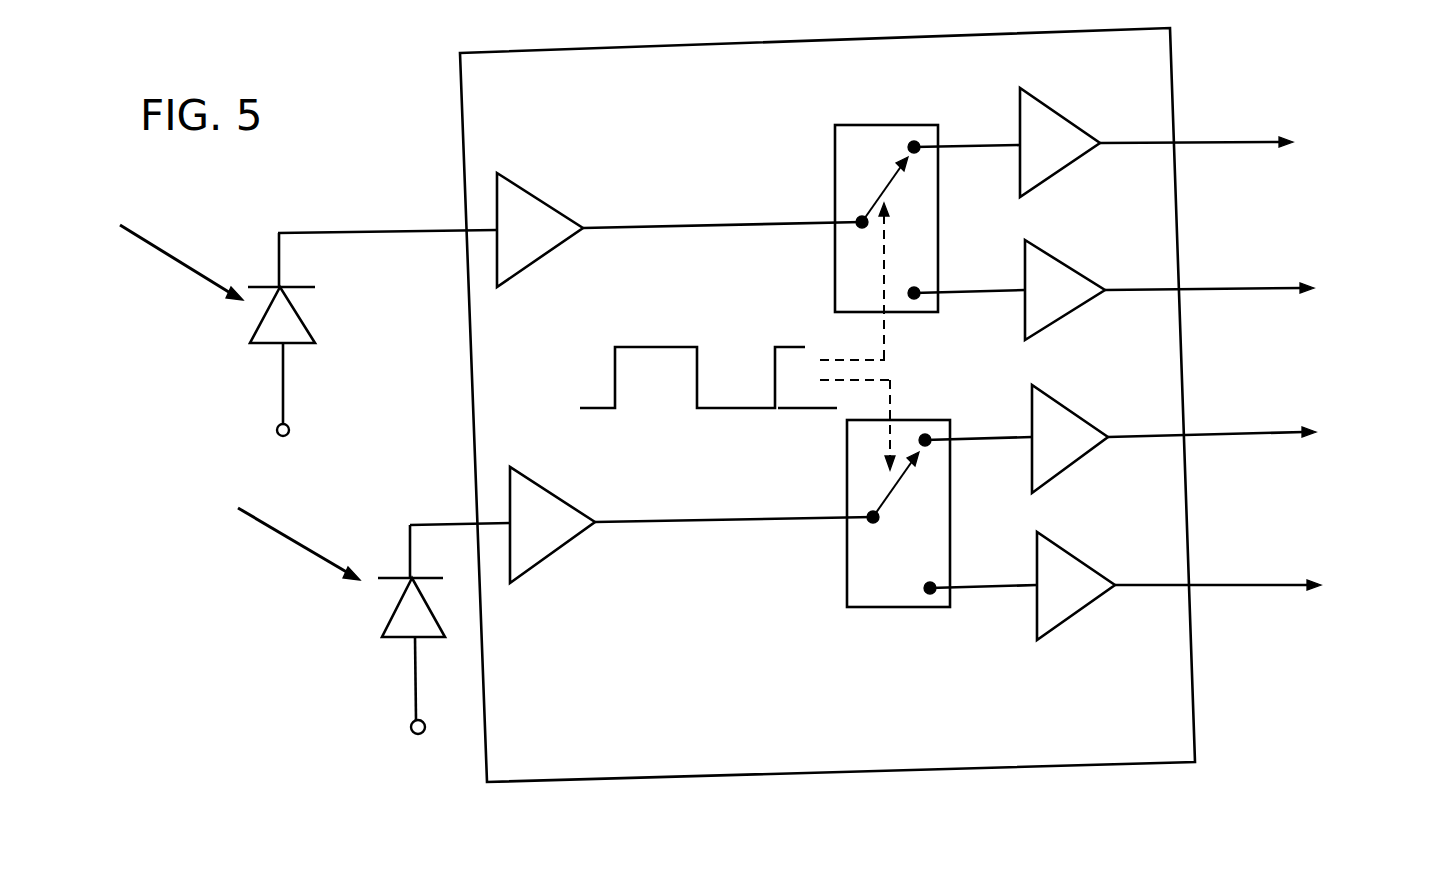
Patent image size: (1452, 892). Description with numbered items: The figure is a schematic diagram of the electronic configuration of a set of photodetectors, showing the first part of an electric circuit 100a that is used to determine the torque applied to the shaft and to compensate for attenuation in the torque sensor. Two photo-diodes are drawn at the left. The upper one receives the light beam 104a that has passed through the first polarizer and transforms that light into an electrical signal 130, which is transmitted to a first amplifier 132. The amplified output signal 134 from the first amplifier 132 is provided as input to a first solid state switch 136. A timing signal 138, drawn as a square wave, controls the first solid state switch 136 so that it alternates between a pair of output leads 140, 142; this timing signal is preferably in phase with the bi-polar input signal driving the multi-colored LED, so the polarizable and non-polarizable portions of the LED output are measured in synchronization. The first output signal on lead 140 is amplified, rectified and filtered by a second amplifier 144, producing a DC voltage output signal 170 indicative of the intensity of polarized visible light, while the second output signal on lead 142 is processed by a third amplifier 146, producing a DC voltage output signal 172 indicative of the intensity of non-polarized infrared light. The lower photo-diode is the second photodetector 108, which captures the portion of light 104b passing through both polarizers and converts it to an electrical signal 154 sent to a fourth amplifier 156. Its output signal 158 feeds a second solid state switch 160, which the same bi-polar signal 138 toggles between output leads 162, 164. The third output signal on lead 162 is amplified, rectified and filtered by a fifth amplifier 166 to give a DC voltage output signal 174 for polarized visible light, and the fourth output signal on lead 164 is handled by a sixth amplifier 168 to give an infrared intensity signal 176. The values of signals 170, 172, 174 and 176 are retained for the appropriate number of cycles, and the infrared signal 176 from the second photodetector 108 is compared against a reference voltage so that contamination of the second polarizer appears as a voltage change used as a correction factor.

The first part of electric circuit 100a is at (663, 42).
The light beam 104a is at (140, 237).
The portion of light 104b is at (258, 522).
The second photodetector 108 is at (260, 318).
The electrical signal 130 is at (343, 232).
The first amplifier 132 is at (550, 200).
The amplified output signal 134 is at (688, 222).
The first solid state switch 136 is at (877, 121).
The timing signal 138 is at (598, 370).
The output lead 140 is at (978, 140).
The output lead 142 is at (980, 288).
The second amplifier 144 is at (1060, 112).
The third amplifier 146 is at (1077, 267).
The electrical signal 154 is at (470, 523).
The fourth amplifier 156 is at (555, 492).
The output signal 158 is at (673, 520).
The second solid state switch 160 is at (887, 607).
The output lead 162 is at (988, 436).
The output lead 164 is at (988, 583).
The fifth amplifier 166 is at (1073, 410).
The sixth amplifier 168 is at (1083, 612).
The DC voltage output signal 170 is at (1182, 142).
The DC voltage output signal 172 is at (1198, 288).
The DC voltage output signal 174 is at (1201, 434).
The infrared intensity signal 176 is at (1201, 582).